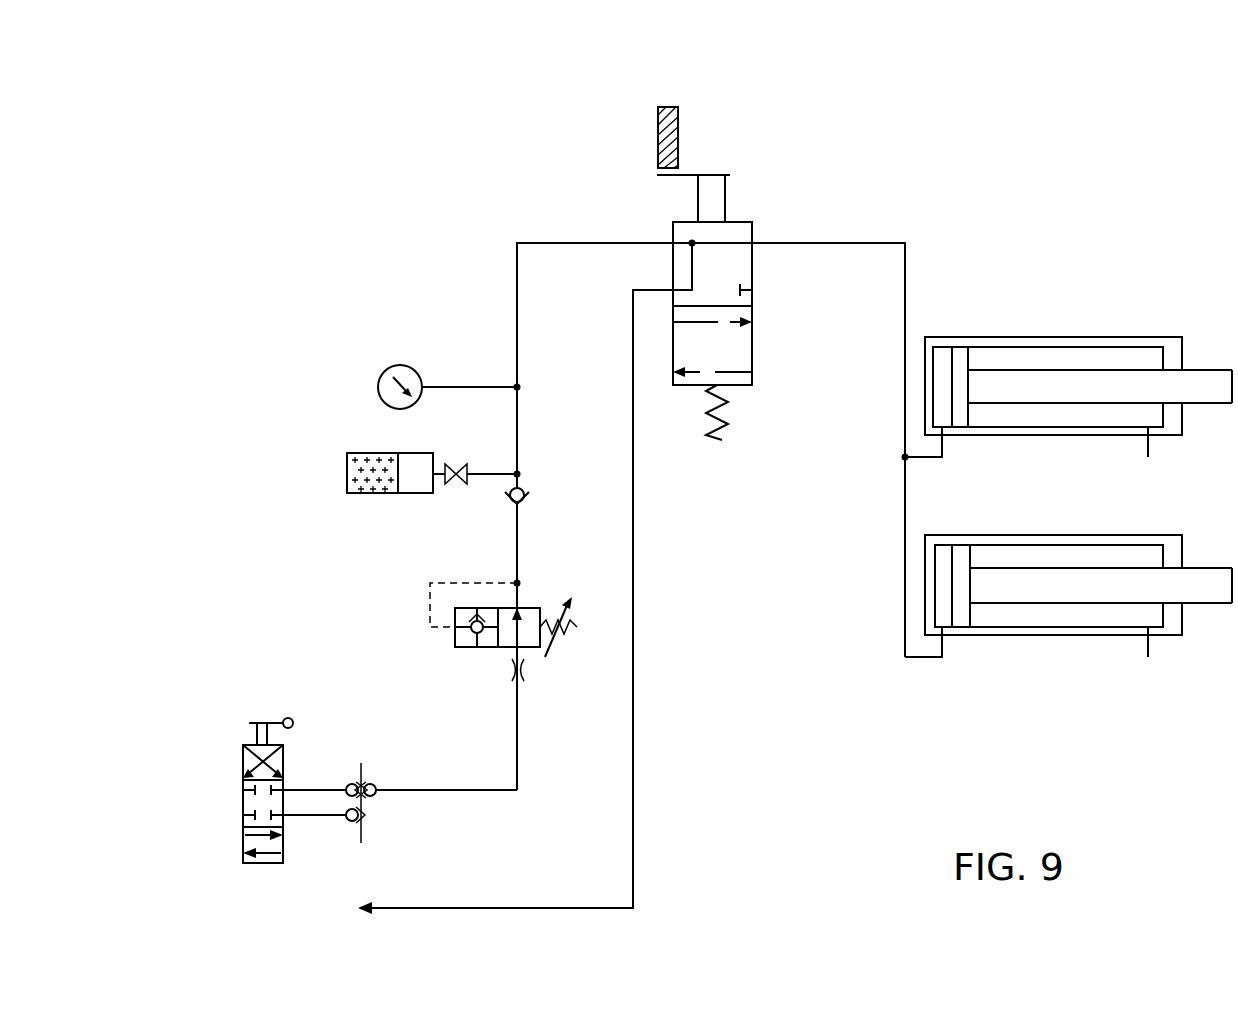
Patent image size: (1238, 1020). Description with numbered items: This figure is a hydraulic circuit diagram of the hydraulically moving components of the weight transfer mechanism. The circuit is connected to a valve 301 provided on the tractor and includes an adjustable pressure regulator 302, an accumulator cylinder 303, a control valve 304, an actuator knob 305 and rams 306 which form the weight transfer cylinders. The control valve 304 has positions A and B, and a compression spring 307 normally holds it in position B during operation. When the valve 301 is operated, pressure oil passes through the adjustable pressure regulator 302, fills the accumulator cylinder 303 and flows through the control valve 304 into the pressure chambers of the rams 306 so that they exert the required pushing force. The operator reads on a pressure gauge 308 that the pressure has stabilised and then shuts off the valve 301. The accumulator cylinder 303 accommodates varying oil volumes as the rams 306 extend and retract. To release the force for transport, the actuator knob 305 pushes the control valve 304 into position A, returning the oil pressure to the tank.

The valve 301 is at (253, 752).
The adjustable pressure regulator 302 is at (467, 640).
The accumulator cylinder 303 is at (347, 467).
The control valve 304 is at (733, 253).
The actuator knob 305 is at (678, 128).
The rams 306 is at (1033, 357).
The compression spring 307 is at (722, 430).
The pressure gauge 308 is at (395, 375).